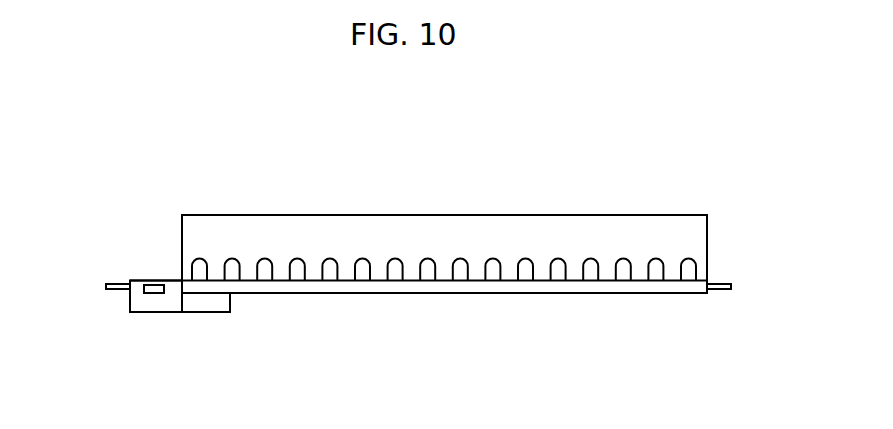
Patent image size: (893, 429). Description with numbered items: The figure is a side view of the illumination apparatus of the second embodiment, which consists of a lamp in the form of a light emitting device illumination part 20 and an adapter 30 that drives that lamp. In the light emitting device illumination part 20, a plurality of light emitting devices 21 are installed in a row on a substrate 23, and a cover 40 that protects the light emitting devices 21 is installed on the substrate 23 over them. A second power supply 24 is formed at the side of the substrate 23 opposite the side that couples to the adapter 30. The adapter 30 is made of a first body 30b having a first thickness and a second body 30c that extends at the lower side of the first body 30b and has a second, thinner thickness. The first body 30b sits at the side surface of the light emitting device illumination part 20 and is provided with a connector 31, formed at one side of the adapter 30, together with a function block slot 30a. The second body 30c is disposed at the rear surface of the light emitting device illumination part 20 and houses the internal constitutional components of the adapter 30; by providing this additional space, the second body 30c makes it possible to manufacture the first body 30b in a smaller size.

The light emitting device illumination part 20 is at (678, 187).
The cover 40 is at (507, 215).
The light emitting devices 21 is at (395, 281).
The substrate 23 is at (608, 294).
The second power supply 24 is at (715, 290).
The adapter 30 is at (138, 252).
The function block slot 30a is at (153, 293).
The first body 30b is at (135, 313).
The second body 30c is at (225, 313).
The connector 31 is at (112, 290).